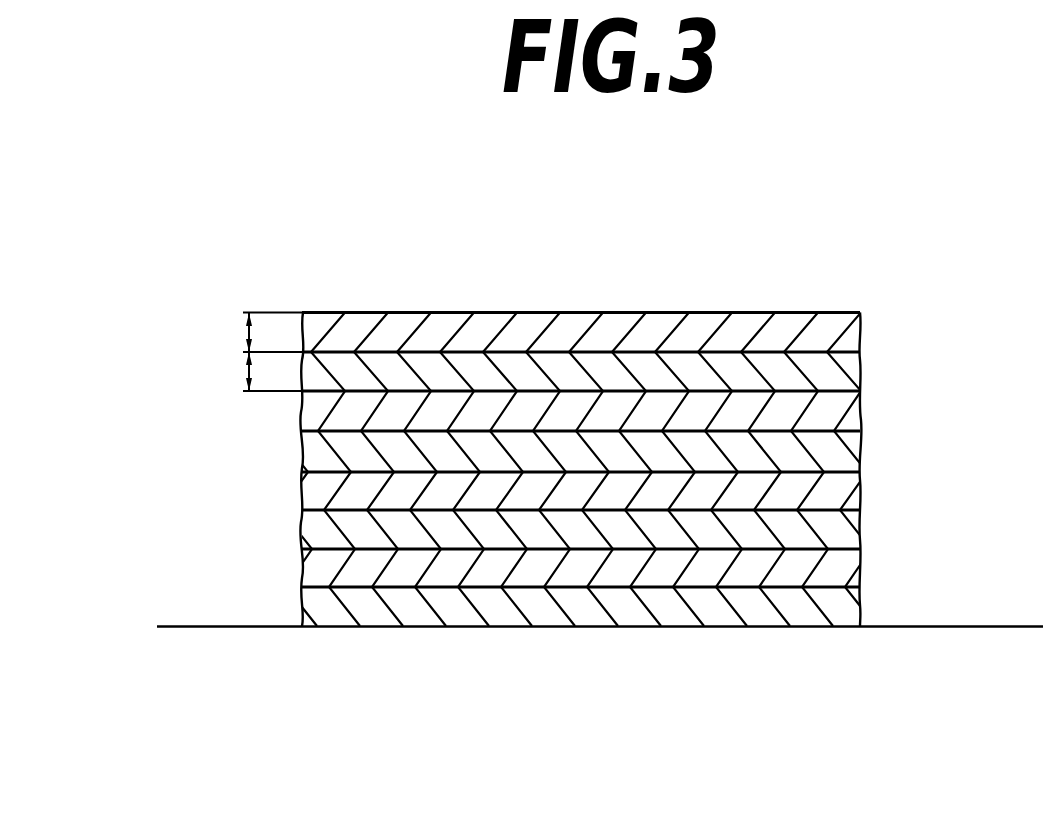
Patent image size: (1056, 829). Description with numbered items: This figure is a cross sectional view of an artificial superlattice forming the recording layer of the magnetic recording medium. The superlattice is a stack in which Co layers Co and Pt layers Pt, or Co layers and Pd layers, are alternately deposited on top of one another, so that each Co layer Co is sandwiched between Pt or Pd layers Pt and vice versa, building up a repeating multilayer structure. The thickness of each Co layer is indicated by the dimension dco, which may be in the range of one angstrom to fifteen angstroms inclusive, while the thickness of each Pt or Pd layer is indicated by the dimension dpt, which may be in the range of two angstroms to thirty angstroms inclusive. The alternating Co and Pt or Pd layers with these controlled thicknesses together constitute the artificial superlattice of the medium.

The Co layer Co is at (593, 470).
The Pt or Pd layer Pt is at (650, 473).
The thickness of the Co layer dco is at (242, 336).
The thickness of the Pt or Pd layer dpt is at (181, 375).